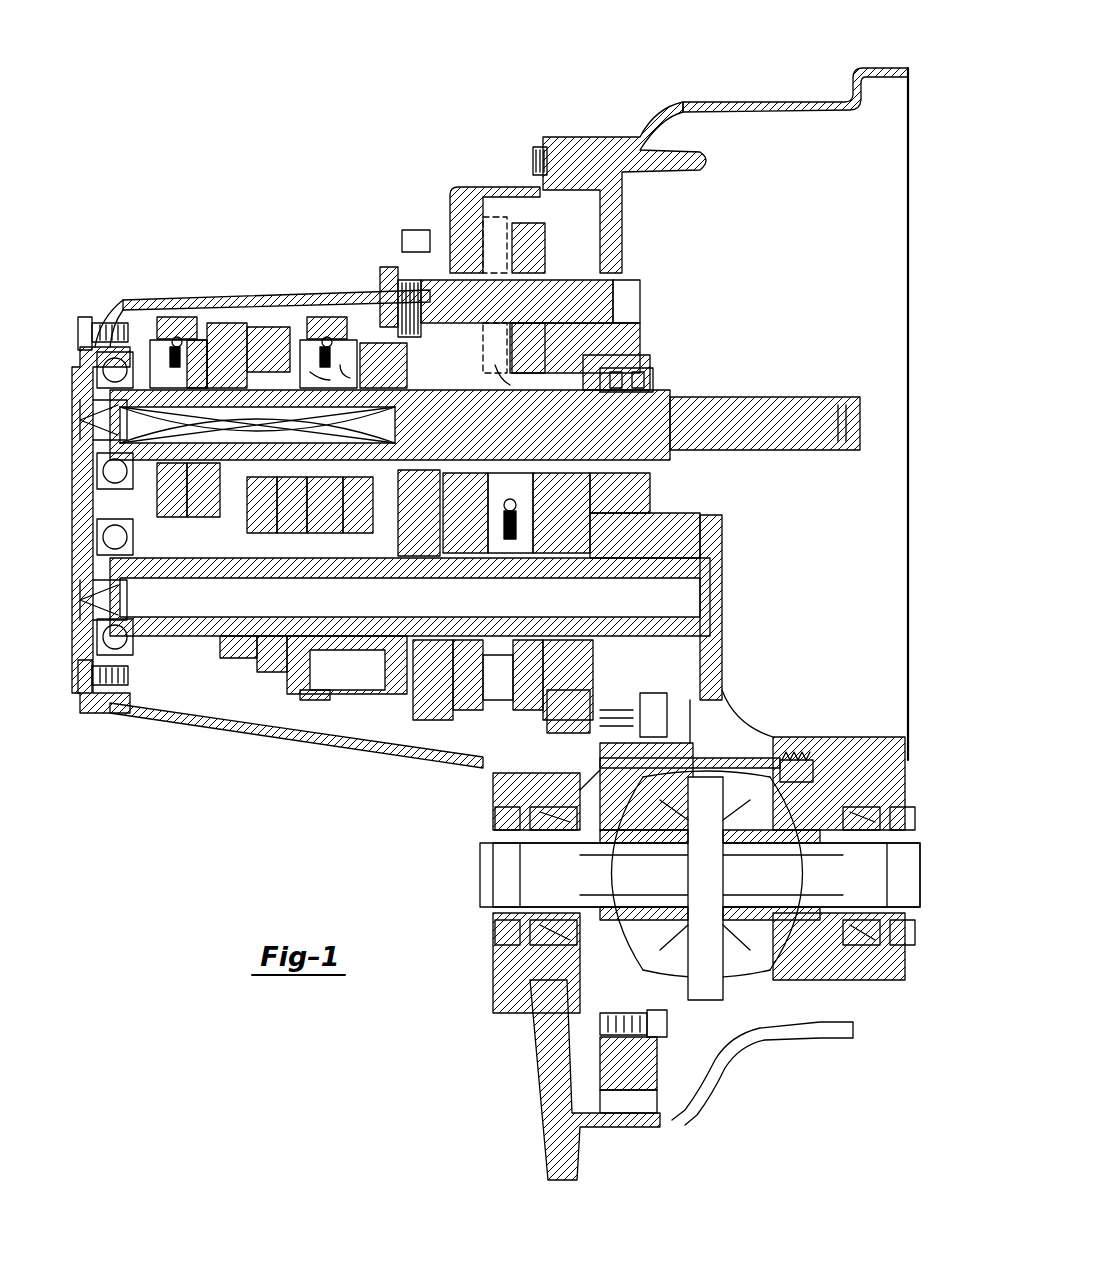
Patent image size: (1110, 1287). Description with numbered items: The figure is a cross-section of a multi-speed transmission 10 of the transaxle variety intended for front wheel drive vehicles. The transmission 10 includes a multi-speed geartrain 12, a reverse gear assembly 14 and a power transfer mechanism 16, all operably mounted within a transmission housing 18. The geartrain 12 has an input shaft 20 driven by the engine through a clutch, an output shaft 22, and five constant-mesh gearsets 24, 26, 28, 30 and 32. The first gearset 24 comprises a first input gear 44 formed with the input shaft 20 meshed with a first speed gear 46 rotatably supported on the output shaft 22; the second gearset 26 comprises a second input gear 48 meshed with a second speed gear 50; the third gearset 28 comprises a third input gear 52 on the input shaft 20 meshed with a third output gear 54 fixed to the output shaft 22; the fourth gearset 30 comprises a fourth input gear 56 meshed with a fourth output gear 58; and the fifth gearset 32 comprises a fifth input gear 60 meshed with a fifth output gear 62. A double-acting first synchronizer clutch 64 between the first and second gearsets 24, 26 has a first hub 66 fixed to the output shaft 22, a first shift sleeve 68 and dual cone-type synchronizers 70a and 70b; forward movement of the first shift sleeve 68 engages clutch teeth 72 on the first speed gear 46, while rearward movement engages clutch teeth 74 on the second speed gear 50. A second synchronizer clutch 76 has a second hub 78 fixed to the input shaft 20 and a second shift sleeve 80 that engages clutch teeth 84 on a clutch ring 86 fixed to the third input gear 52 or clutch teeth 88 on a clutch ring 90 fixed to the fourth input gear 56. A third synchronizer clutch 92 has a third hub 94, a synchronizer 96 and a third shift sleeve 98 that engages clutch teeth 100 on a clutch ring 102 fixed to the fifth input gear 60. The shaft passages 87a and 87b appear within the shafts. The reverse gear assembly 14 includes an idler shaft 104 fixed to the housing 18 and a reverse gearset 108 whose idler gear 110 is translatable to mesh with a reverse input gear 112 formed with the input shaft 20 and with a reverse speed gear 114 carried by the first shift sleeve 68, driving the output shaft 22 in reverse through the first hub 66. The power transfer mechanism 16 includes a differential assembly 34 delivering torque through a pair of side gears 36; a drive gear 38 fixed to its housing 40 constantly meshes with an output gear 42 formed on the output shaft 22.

The multi-speed transmission 10 is at (480, 95).
The multi-speed geartrain 12 is at (140, 320).
The reverse gear assembly 14 is at (545, 245).
The power transfer mechanism 16 is at (715, 740).
The transmission housing 18 is at (735, 100).
The input shaft 20 is at (805, 395).
The output shaft 22 is at (185, 640).
The first gearset 24 is at (585, 515).
The second gearset 26 is at (435, 720).
The third gearset 28 is at (365, 690).
The fourth gearset 30 is at (275, 680).
The fifth gearset 32 is at (245, 325).
The differential assembly 34 is at (770, 760).
The side gears 36 is at (620, 855).
The drive gear 38 is at (640, 1095).
The housing of the differential assembly 40 is at (700, 1015).
The output gear 42 is at (620, 530).
The first input gear 44 is at (580, 380).
The first speed gear 46 is at (585, 725).
The second input gear 48 is at (440, 370).
The second speed gear 50 is at (420, 710).
The third input gear 52 is at (385, 350).
The third output gear 54 is at (385, 685).
The fourth input gear 56 is at (230, 330).
The fourth output gear 58 is at (310, 655).
The fifth input gear 60 is at (235, 318).
The fifth output gear 62 is at (235, 660).
The first synchronizer clutch 64 is at (525, 715).
The first hub 66 is at (510, 545).
The first shift sleeve 68 is at (570, 712).
The dual cone-type synchronizer 70a is at (560, 545).
The dual cone-type synchronizer 70b is at (462, 540).
The clutch teeth 72 is at (605, 505).
The clutch teeth 74 is at (465, 712).
The second synchronizer clutch 76 is at (330, 320).
The second hub 78 is at (405, 400).
The second shift sleeve 80 is at (310, 340).
The clutch teeth 84 is at (325, 530).
The clutch ring 86 is at (358, 530).
The oil passage 87a is at (340, 370).
The oil passage 87b is at (312, 375).
The clutch teeth 88 is at (292, 530).
The clutch ring 90 is at (262, 530).
The third synchronizer clutch 92 is at (180, 320).
The third hub 94 is at (110, 372).
The synchronizer 96 is at (195, 345).
The third shift sleeve 98 is at (140, 505).
The clutch teeth 100 is at (205, 515).
The clutch ring 102 is at (175, 515).
The idler shaft 104 is at (600, 295).
The reverse gearset 108 is at (585, 350).
The idler gear 110 is at (495, 230).
The reverse input gear 112 is at (500, 370).
The reverse speed gear 114 is at (490, 705).